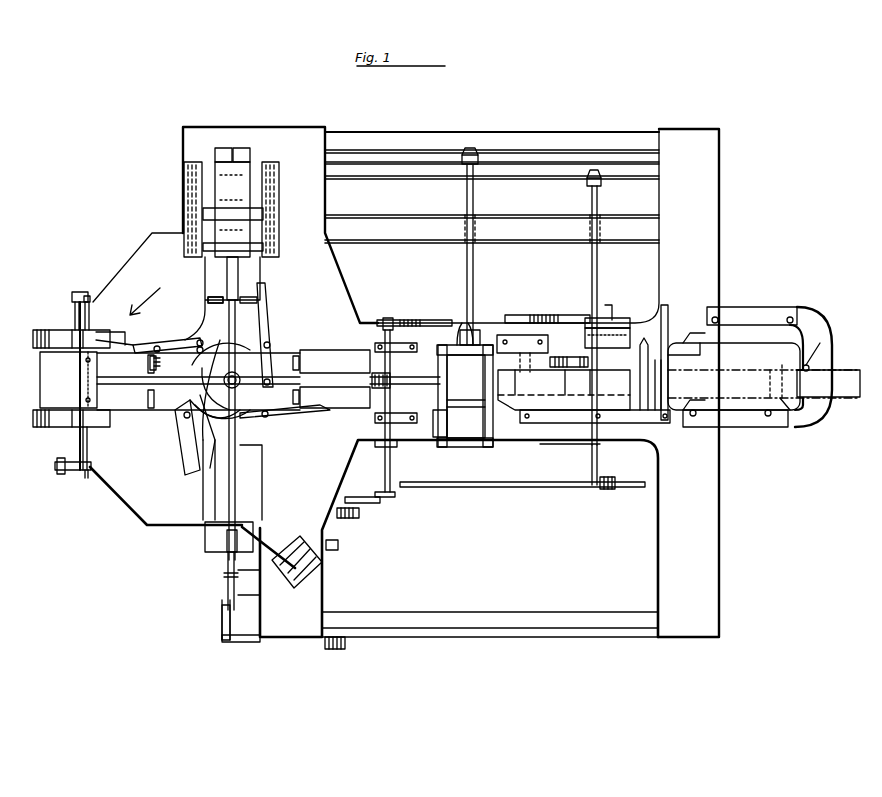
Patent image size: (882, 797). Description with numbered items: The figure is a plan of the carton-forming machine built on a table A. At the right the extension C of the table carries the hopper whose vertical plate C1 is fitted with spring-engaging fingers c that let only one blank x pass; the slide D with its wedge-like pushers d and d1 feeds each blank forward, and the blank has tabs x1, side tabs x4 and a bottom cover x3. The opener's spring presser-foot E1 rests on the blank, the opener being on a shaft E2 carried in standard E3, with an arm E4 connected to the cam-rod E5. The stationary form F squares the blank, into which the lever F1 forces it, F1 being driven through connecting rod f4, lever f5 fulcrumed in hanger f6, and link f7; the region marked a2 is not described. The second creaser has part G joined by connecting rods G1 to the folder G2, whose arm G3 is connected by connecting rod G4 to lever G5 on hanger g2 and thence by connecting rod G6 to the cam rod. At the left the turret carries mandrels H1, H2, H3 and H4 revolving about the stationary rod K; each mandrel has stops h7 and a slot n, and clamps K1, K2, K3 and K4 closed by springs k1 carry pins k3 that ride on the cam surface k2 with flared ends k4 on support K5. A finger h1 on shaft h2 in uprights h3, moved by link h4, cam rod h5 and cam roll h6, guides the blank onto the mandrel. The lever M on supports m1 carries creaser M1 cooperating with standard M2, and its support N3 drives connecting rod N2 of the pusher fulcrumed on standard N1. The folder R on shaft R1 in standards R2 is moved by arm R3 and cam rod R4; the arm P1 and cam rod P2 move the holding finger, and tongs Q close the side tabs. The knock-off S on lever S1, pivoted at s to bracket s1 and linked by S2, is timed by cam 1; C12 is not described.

The table A is at (325, 128).
The lever M is at (245, 175).
The support N3 is at (238, 150).
The supports m1 is at (186, 196).
The creaser M1 is at (252, 222).
The standard M2 is at (264, 236).
The mandrel H2 is at (262, 282).
The stops h7 is at (218, 297).
The springs k1 is at (237, 345).
The clamp K2 is at (270, 320).
The clamp K3 is at (168, 345).
The mandrel H3 is at (121, 350).
The pin k3 is at (227, 372).
The support K5 is at (216, 389).
The flared outer ends k4 is at (165, 380).
The cam surface k2 is at (182, 412).
The clamp K1 is at (211, 431).
The clamp K4 is at (190, 445).
The rod K is at (300, 411).
The slot n is at (128, 393).
The mandrel H1 is at (345, 362).
The finger h1 is at (388, 375).
The shaft h2 is at (385, 455).
The uprights h3 is at (408, 320).
The link h4 is at (382, 497).
The cam rod h5 is at (355, 505).
The cam roll h6 is at (342, 529).
The hinged frame portion G is at (440, 448).
The folder G2 is at (465, 396).
The connecting rods G1 is at (447, 397).
The arm G3 is at (472, 335).
The connecting rod G4 is at (460, 332).
The lever G5 is at (474, 268).
The connecting rod G6 is at (466, 178).
The hanger g2 is at (480, 228).
The connecting rod f4 is at (588, 193).
The lever f5 is at (592, 268).
The hanger f6 is at (603, 225).
The link f7 is at (613, 297).
The lever F1 is at (612, 318).
The standard E3 is at (538, 315).
The spring presser-foot E1 is at (578, 357).
The guide a2 is at (530, 361).
The form F is at (564, 390).
The cam-rod E5 is at (522, 493).
The shaft E2 is at (590, 450).
The arm E4 is at (619, 486).
The pusher d1 is at (641, 374).
The spring-engaging fingers c is at (656, 385).
The vertical plate C1 is at (669, 318).
The extension of the table C is at (815, 412).
The bracket C12 is at (792, 318).
The blank x is at (764, 376).
The tab x1 is at (684, 351).
The side tabs x4 is at (743, 367).
The bottom cover x3 is at (782, 375).
The pusher d is at (775, 362).
The slide D is at (840, 370).
The cam rod P2 is at (86, 292).
The arm P1 is at (84, 300).
The tongs Q is at (76, 322).
The folder R is at (68, 380).
The standards R2 is at (55, 330).
The shaft R1 is at (90, 440).
The arm R3 is at (58, 462).
The cam rod R4 is at (86, 477).
The connecting rod N2 is at (227, 488).
The mandrel H4 is at (262, 490).
The standard N1 is at (300, 540).
The knock-off S is at (205, 540).
The bracket s1 is at (237, 581).
The lever S1 is at (222, 581).
The pivot s is at (249, 582).
The link S2 is at (222, 624).
The cam 1 is at (336, 650).